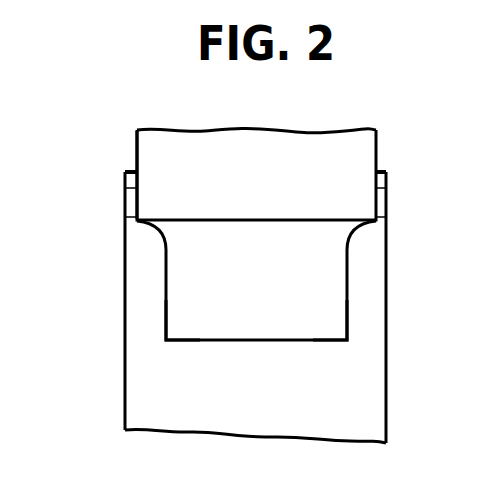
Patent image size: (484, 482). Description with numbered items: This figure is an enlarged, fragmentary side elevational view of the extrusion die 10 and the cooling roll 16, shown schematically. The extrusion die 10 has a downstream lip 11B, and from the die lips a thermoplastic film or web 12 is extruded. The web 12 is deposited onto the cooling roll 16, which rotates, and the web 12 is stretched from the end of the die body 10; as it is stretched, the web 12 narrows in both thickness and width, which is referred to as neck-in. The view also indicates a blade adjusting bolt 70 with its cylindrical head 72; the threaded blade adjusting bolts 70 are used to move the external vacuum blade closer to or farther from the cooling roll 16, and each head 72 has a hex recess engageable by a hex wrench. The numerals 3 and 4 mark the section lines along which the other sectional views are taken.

The extrusion die 10 is at (375, 158).
The downstream lip 11B is at (155, 146).
The web 12 is at (338, 262).
The cooling roll 16 is at (138, 408).
The blade adjusting bolt 70 is at (163, 327).
The cylindrical head 72 is at (347, 322).
The section line 3- 3 is at (278, 123).
The section line 4- 4 is at (90, 285).